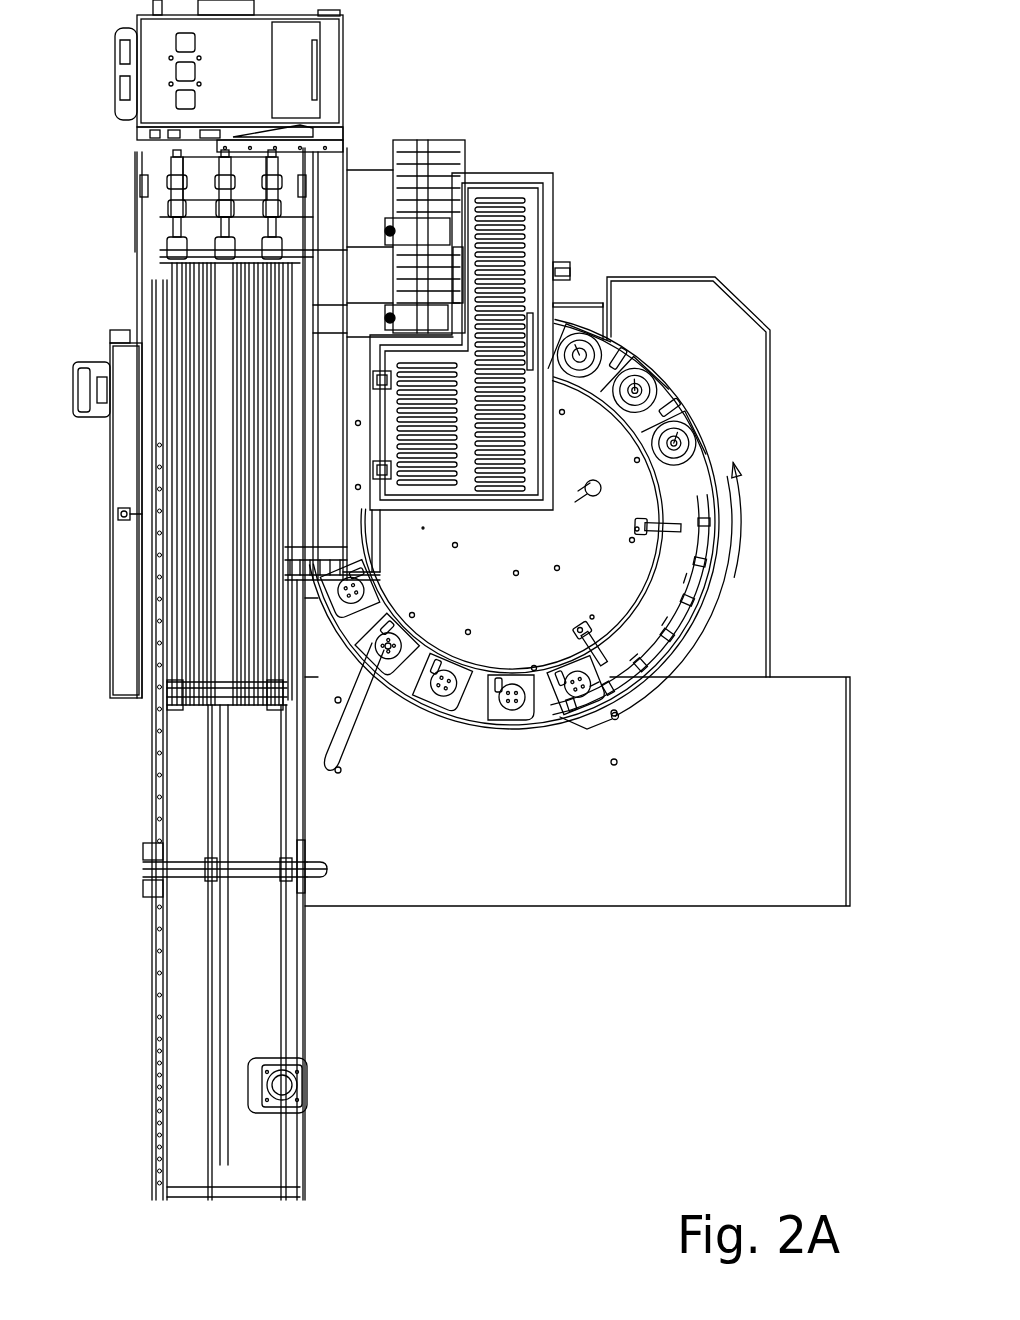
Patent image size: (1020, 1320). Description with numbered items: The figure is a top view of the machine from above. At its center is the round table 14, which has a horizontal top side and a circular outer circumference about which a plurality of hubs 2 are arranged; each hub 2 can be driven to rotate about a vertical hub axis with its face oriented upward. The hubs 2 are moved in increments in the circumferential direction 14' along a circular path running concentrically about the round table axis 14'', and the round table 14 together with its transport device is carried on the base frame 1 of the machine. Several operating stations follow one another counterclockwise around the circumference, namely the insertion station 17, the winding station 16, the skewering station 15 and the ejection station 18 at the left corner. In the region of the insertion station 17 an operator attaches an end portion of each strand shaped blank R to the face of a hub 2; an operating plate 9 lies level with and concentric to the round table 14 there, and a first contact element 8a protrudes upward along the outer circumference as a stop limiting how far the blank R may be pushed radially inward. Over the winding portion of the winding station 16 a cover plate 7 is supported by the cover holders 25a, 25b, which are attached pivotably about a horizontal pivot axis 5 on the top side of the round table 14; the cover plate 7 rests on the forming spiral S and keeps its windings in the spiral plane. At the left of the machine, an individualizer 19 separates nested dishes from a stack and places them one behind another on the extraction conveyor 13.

The base frame 1 is at (621, 208).
The hub 2 is at (676, 445).
The horizontal pivot axis 5 is at (637, 529).
The cover plate 7 is at (630, 605).
The first contact element 8a is at (470, 667).
The operating plate 9 is at (577, 752).
The extraction conveyor 13 is at (261, 664).
The round table 14 is at (512, 525).
The circumferential direction 14' is at (770, 520).
The round table axis 14'' is at (517, 525).
The skewering station 15 is at (503, 112).
The winding station 16 is at (715, 605).
The insertion station 17 is at (469, 731).
The ejection station 18 is at (421, 527).
The individualizer 19 is at (110, 475).
The cover holder 25a is at (592, 645).
The cover holder 25b is at (668, 523).
The strand shaped blank R is at (343, 753).
The spiral S is at (636, 385).